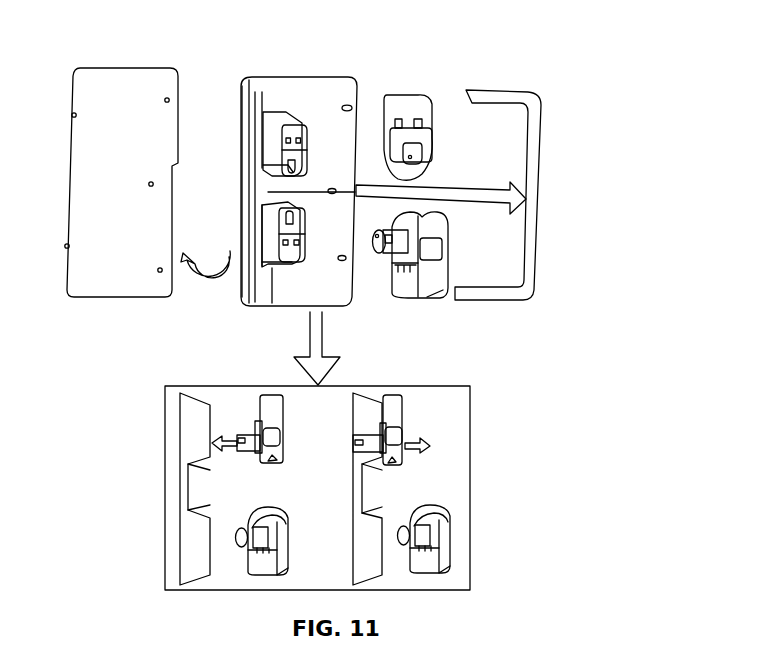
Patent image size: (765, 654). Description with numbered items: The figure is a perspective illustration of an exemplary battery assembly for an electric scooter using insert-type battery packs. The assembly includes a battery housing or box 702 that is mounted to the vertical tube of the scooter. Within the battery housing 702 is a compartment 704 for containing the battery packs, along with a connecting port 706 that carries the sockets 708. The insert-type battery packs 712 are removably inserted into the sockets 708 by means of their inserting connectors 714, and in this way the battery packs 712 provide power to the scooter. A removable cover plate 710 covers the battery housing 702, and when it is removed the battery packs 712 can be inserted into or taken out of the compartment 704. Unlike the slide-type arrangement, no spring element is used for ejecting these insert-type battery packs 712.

The battery housing 702 is at (240, 290).
The compartment 704 is at (285, 156).
The connecting port 706 is at (265, 97).
The sockets 708 is at (307, 128).
The removable cover plate 710 is at (531, 242).
The battery packs 712 is at (428, 96).
The inserting connectors 714 is at (397, 250).